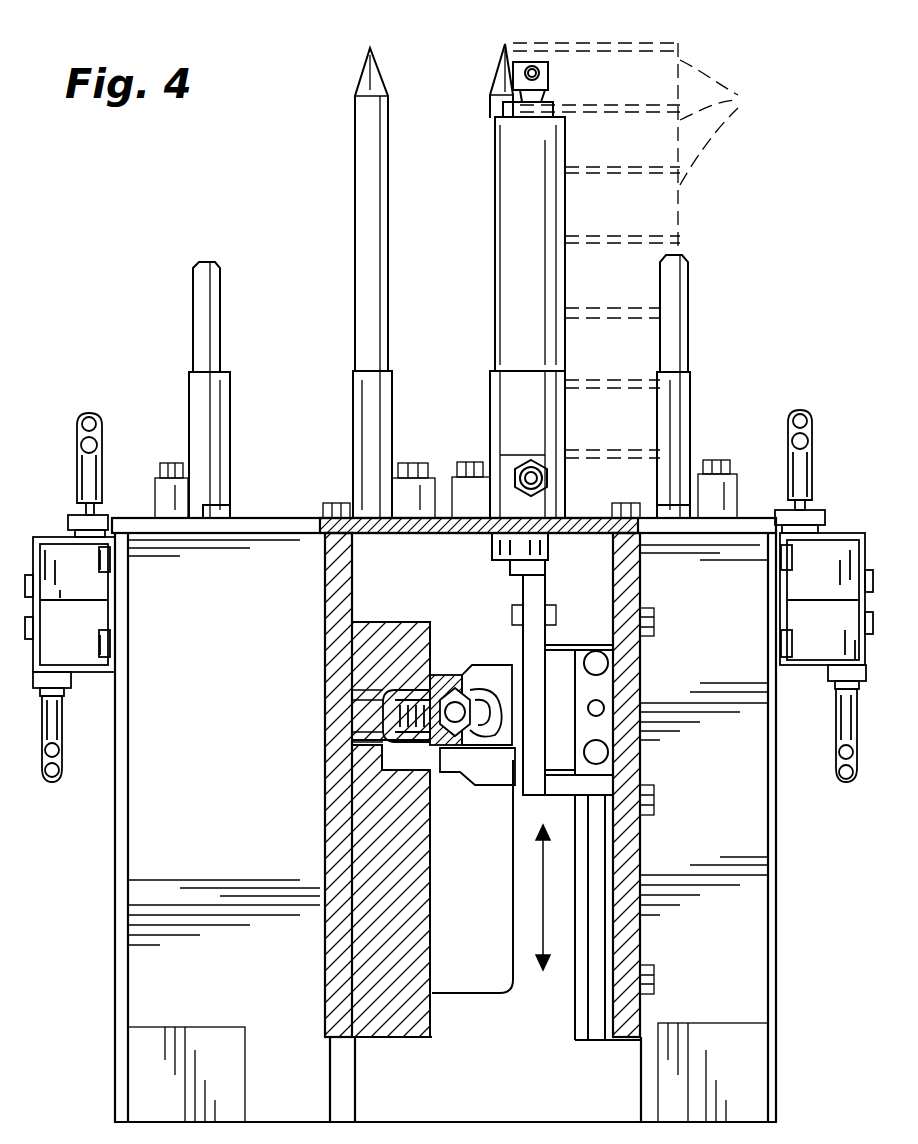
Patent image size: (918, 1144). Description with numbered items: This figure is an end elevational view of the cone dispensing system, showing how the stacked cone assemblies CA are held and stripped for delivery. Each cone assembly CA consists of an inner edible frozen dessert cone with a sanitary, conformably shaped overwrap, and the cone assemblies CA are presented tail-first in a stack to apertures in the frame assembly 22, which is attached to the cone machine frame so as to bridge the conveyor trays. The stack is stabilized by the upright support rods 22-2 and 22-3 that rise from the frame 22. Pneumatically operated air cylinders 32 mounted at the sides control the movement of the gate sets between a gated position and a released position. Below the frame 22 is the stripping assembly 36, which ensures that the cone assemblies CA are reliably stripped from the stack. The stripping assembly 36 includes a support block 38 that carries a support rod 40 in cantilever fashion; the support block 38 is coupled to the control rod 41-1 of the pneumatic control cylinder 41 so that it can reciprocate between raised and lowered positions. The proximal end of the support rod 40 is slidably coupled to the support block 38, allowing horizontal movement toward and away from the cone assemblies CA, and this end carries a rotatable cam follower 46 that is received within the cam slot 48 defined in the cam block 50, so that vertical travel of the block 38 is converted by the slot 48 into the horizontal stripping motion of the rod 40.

The frame assembly 22 is at (272, 518).
The support rod 22-2 is at (193, 300).
The support rod 22-3 is at (490, 95).
The air cylinder 32 is at (92, 628).
The stripping assembly 36 is at (392, 605).
The support block 38 is at (540, 688).
The support rod 40 is at (488, 690).
The pneumatic control cylinder 41 is at (538, 288).
The control rod 41-1 is at (560, 570).
The cam follower 46 is at (390, 706).
The cam slot 48 is at (418, 775).
The cam block 50 is at (400, 885).
The cone assembly CA is at (644, 250).